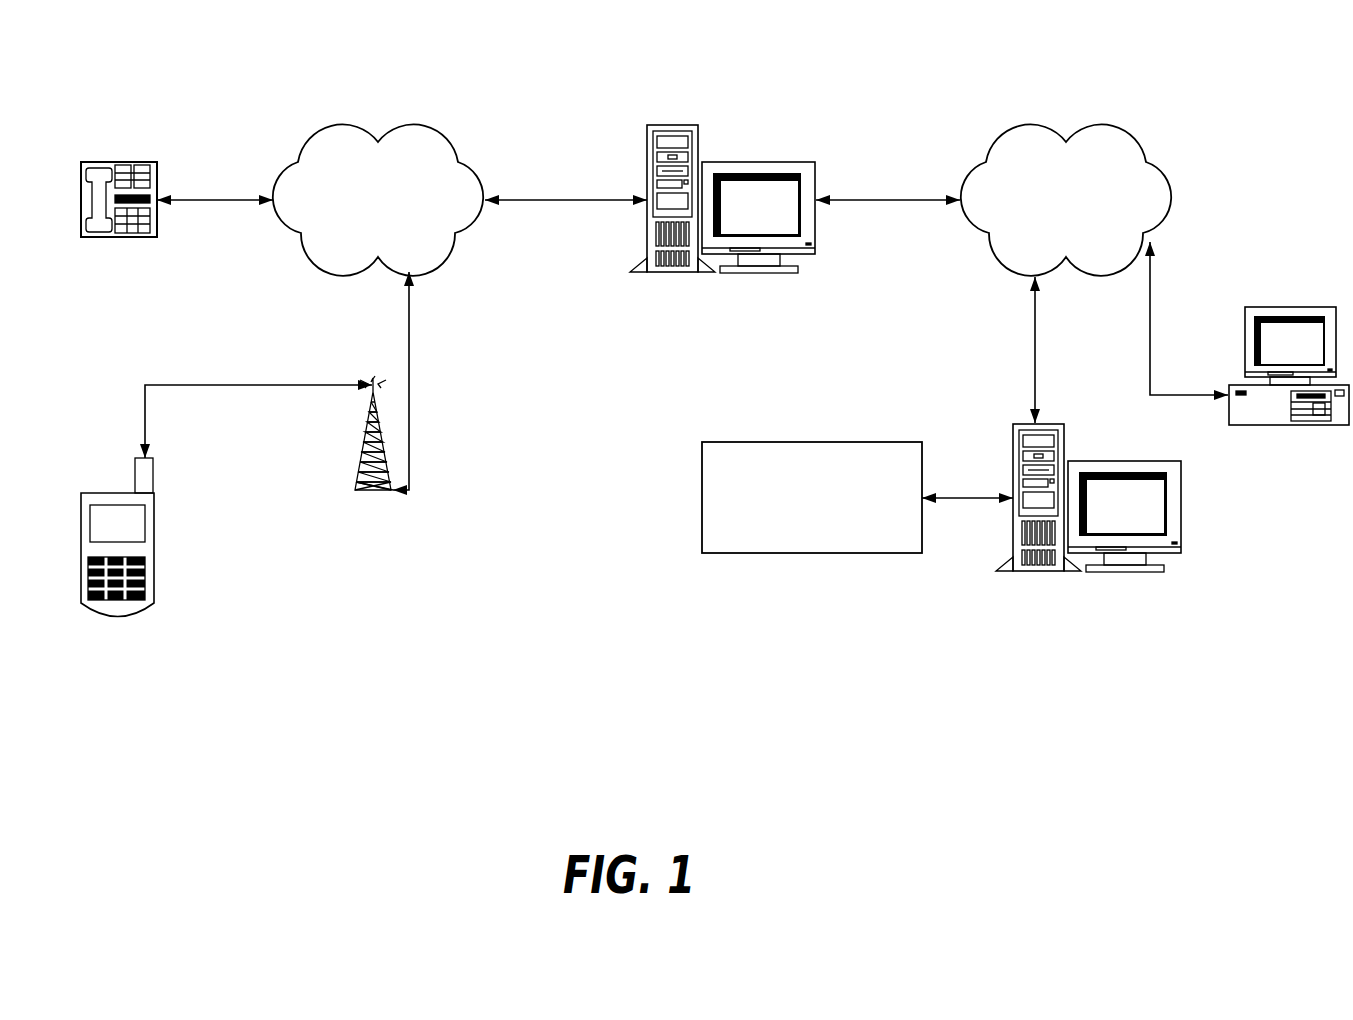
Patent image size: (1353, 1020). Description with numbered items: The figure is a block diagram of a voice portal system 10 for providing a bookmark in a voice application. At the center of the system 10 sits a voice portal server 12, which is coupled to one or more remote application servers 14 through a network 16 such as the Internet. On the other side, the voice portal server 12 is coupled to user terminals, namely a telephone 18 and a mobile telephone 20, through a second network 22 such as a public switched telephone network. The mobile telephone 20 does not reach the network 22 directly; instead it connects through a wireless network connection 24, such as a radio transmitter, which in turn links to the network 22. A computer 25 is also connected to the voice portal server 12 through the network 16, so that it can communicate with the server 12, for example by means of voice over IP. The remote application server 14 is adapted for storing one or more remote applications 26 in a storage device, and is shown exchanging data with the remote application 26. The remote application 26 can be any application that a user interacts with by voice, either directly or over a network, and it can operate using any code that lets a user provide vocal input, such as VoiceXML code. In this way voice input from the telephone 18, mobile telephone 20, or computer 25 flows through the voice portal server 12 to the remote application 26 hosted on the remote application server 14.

The voice portal system 10 is at (362, 43).
The voice portal server 12 is at (683, 125).
The remote application server 14 is at (1013, 452).
The network 16 is at (1078, 127).
The telephone 18 is at (107, 160).
The mobile telephone 20 is at (152, 588).
The network 22 is at (440, 262).
The wireless network connection 24 is at (385, 447).
The computer 25 is at (1246, 340).
The remote application 26 is at (816, 442).